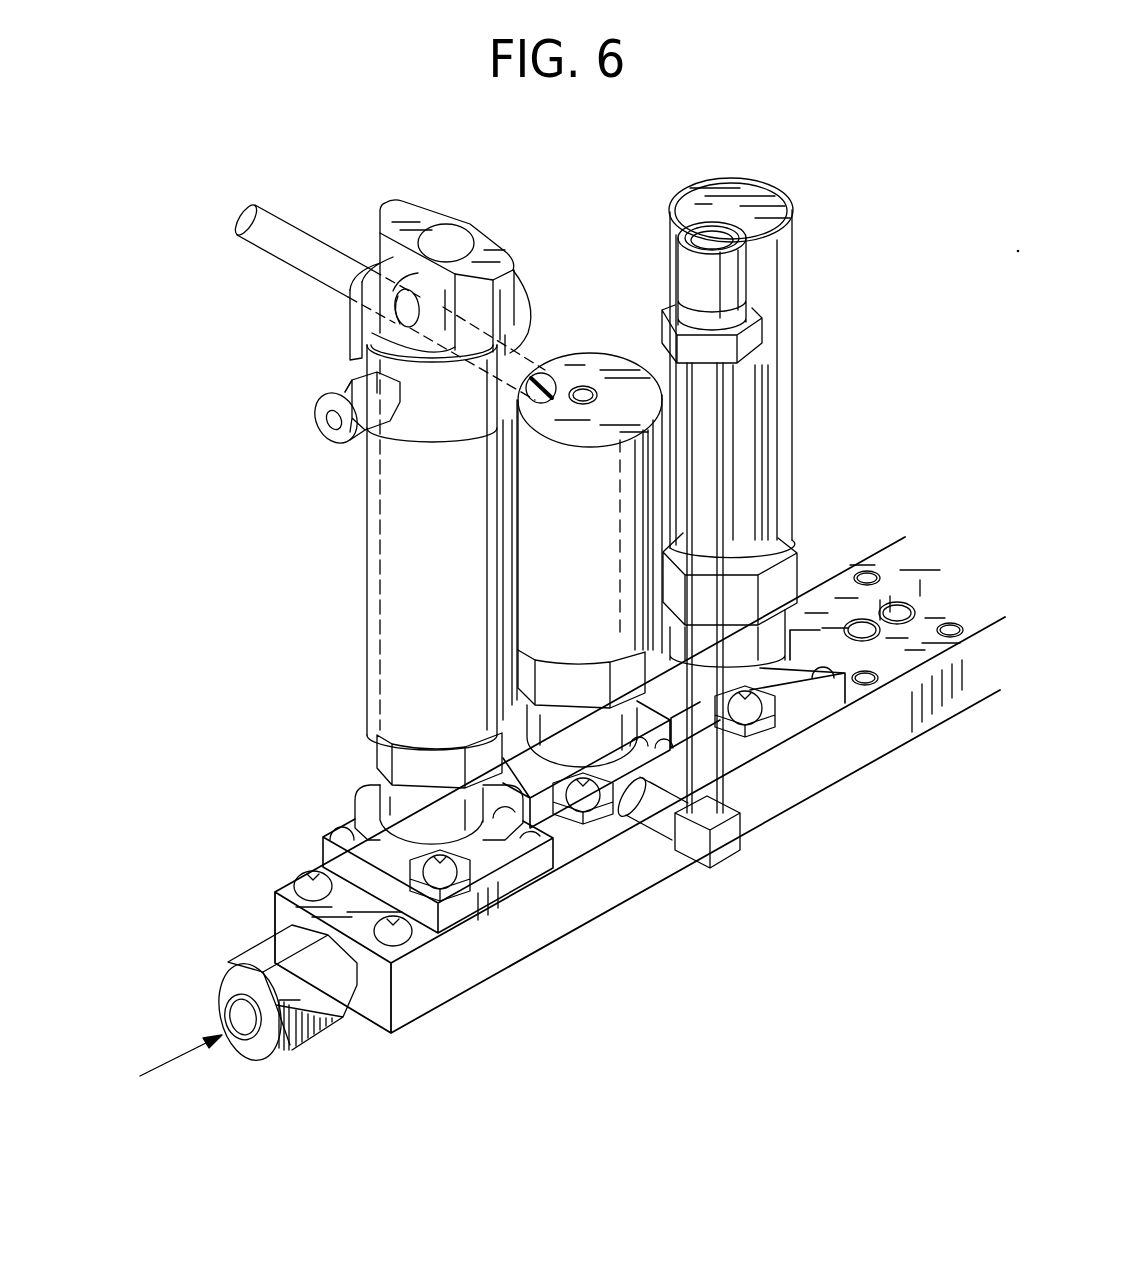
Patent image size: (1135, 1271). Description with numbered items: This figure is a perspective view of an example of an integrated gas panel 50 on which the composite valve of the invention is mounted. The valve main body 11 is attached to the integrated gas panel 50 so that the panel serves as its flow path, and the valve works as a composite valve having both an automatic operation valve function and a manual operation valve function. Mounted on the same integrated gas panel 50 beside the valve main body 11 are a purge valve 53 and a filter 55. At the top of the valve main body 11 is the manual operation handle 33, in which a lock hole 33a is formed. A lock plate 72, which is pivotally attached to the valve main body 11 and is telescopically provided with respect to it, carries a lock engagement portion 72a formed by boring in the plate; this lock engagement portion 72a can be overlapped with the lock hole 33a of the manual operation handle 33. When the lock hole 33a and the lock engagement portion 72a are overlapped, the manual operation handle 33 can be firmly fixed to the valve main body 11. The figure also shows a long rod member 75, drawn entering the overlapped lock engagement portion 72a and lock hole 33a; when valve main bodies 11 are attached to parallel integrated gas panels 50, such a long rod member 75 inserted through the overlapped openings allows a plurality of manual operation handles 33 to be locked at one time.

The valve main body 11 is at (383, 517).
The manual operation handle 33 is at (403, 211).
The lock hole 33a is at (388, 333).
The integrated gas panel 50 is at (652, 937).
The purge valve 53 is at (568, 363).
The filter 55 is at (778, 338).
The lock plate 72 is at (357, 312).
The lock engagement portion 72a is at (366, 266).
The long rod member 75 is at (244, 212).